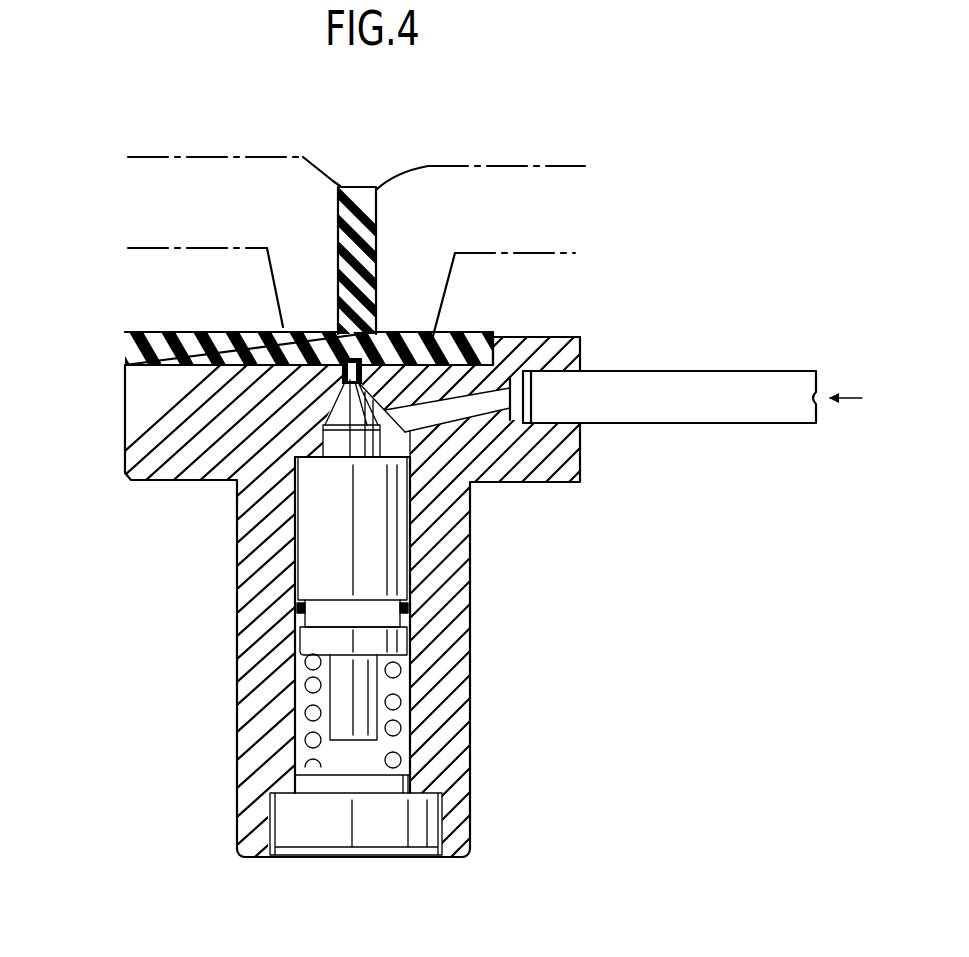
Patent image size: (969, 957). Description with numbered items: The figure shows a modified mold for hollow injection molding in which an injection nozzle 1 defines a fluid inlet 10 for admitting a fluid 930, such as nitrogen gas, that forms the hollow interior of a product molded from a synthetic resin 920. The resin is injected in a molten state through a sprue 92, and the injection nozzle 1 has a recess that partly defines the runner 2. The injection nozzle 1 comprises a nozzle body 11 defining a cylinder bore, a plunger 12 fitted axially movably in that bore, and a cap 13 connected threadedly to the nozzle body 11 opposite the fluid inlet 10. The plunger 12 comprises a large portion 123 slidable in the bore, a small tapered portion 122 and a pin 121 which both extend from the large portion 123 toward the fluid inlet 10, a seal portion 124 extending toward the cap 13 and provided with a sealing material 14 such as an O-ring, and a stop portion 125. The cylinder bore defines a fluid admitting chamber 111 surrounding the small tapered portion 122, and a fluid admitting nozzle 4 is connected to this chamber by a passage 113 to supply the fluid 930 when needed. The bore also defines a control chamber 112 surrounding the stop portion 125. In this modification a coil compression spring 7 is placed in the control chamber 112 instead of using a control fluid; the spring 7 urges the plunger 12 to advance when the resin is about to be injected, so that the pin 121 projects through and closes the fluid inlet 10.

The injection nozzle 1 is at (577, 295).
The runner 2 is at (216, 340).
The fluid admitting nozzle 4 is at (708, 388).
The coil compression spring 7 is at (395, 698).
The fluid inlet 10 is at (408, 335).
The nozzle body 11 is at (458, 603).
The plunger 12 is at (415, 535).
The cap 13 is at (352, 830).
The sealing material 14 is at (325, 613).
The sprue 92 is at (372, 230).
The fluid admitting chamber 111 is at (392, 442).
The control chamber 112 is at (400, 747).
The passage 113 is at (530, 337).
The pin 121 is at (345, 378).
The small tapered portion 122 is at (328, 437).
The large portion 123 is at (315, 543).
The seal portion 124 is at (313, 628).
The stop portion 125 is at (348, 706).
The synthetic resin 920 is at (305, 343).
The fluid 930 is at (846, 423).